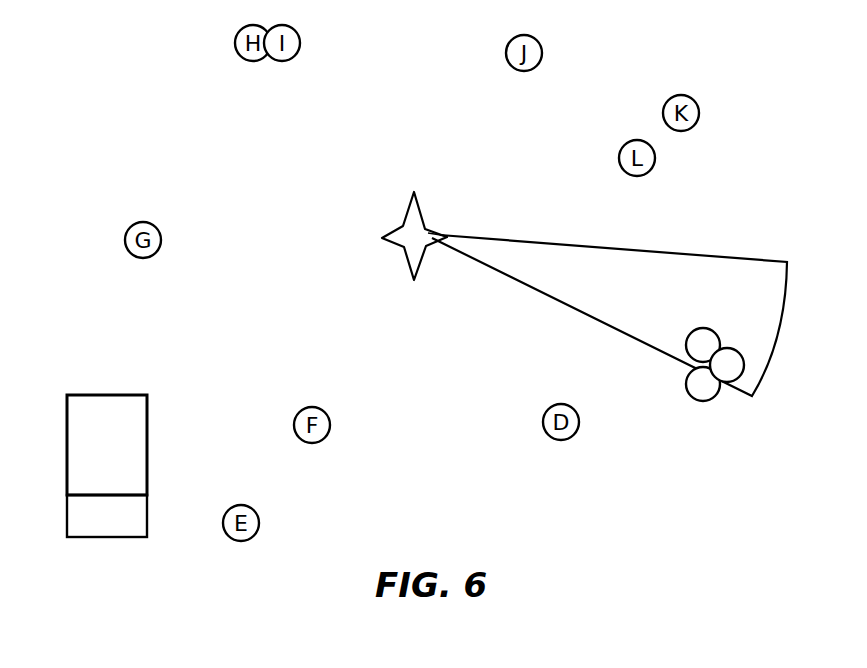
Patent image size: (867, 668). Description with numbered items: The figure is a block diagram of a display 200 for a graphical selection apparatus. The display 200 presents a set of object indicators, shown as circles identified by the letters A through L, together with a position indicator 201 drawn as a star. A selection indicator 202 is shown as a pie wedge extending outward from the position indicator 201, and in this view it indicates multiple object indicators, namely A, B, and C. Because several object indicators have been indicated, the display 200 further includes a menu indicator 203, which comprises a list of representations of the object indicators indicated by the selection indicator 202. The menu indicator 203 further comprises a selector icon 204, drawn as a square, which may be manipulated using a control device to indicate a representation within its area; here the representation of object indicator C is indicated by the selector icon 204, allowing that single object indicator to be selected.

The display 200 is at (160, 110).
The position indicator 201 is at (405, 226).
The selection indicator 202 is at (669, 252).
The menu indicator 203 is at (110, 393).
The selector icon 204 is at (127, 527).